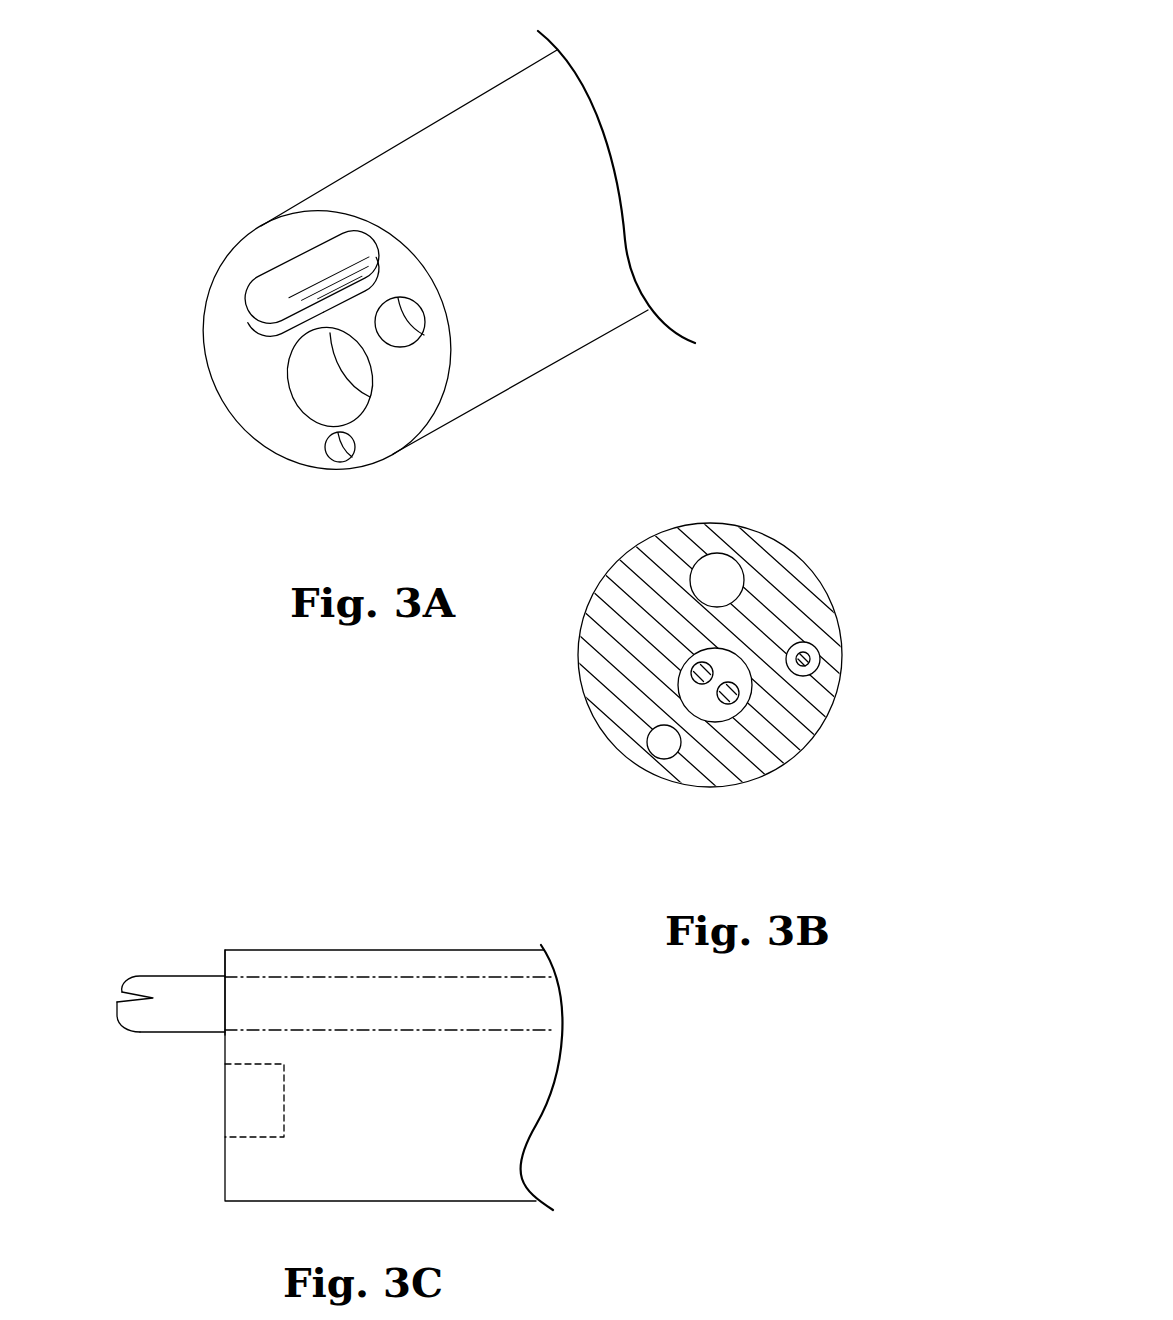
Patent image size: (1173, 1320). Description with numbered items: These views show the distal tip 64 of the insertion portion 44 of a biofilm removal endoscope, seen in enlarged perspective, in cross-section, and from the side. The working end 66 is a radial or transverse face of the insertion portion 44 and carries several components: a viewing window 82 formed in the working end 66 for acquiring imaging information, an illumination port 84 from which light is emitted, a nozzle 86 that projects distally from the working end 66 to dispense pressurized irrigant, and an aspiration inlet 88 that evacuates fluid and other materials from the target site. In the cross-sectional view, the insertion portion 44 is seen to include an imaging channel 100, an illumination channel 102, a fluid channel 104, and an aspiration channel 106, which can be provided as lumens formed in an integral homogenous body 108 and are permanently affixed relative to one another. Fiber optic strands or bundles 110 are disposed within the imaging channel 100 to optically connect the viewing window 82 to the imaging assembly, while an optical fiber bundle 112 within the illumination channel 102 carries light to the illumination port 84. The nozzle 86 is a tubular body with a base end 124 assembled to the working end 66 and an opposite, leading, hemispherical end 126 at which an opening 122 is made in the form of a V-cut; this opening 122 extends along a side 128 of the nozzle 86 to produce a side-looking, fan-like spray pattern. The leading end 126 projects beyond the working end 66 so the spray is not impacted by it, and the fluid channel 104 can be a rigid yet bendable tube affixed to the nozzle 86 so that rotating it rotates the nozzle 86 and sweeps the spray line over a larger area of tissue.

In FIG. 3A, the insertion portion 44 is at (450, 25).
In FIG. 3B, the insertion portion 44 is at (845, 515).
In FIG. 3C, the insertion portion 44 is at (300, 883).
In FIG. 3A, the tip 64 is at (414, 115).
In FIG. 3C, the tip 64 is at (420, 943).
In FIG. 3A, the working end 66 is at (300, 227).
In FIG. 3C, the working end 66 is at (225, 958).
In FIG. 3A, the viewing window 82 is at (307, 414).
In FIG. 3C, the viewing window 82 is at (225, 1138).
In FIG. 3A, the illumination port 84 is at (425, 335).
In FIG. 3A, the nozzle 86 is at (320, 232).
In FIG. 3C, the nozzle 86 is at (164, 968).
In FIG. 3A, the aspiration inlet 88 is at (353, 458).
In FIG. 3B, the imaging channel 100 is at (720, 712).
In FIG. 3B, the illumination channel 102 is at (832, 700).
In FIG. 3B, the fluid channel 104 is at (712, 553).
In FIG. 3C, the fluid channel 104 is at (470, 977).
In FIG. 3B, the aspiration channel 106 is at (673, 753).
In FIG. 3B, the integral homogenous body 108 is at (640, 570).
In FIG. 3B, the fiber optic strands or bundles 110 is at (710, 666).
In FIG. 3B, the optical fiber bundle 112 is at (821, 660).
In FIG. 3A, the opening 122 is at (250, 298).
In FIG. 3C, the opening 122 is at (124, 993).
In FIG. 3A, the base end 124 is at (377, 262).
In FIG. 3C, the base end 124 is at (225, 975).
In FIG. 3A, the leading hemispherical end 126 is at (255, 328).
In FIG. 3C, the leading hemispherical end 126 is at (117, 1020).
In FIG. 3A, the side 128 is at (338, 278).
In FIG. 3C, the side 128 is at (180, 1015).